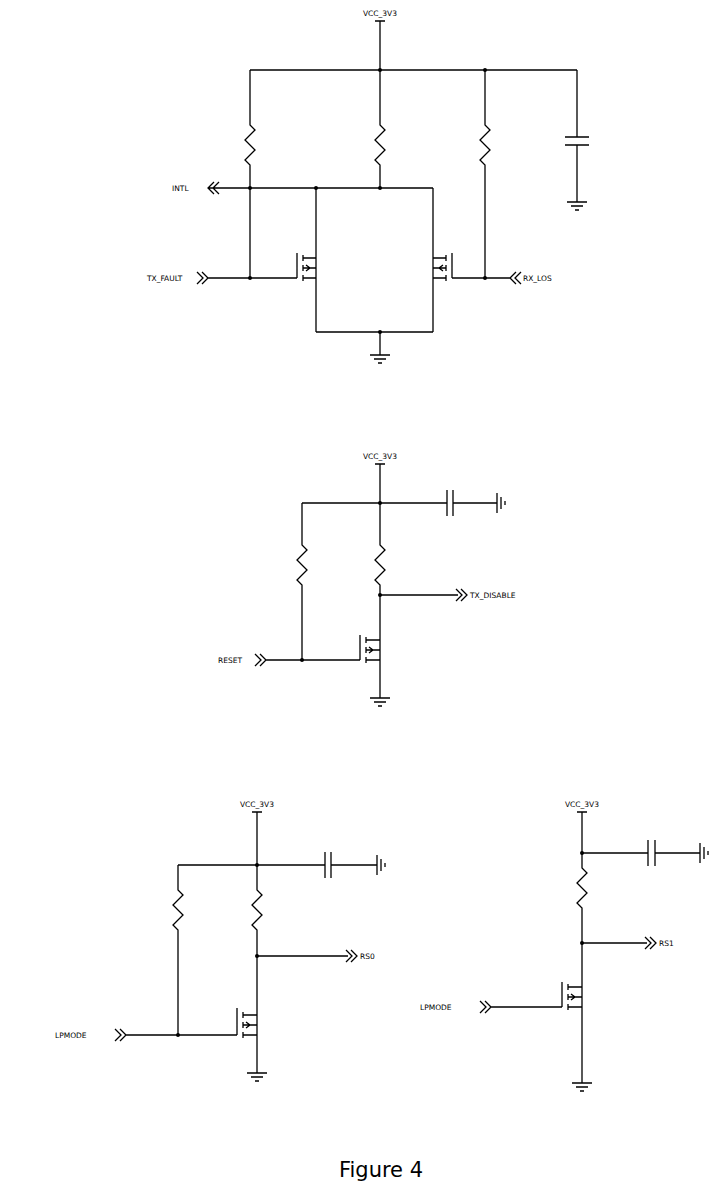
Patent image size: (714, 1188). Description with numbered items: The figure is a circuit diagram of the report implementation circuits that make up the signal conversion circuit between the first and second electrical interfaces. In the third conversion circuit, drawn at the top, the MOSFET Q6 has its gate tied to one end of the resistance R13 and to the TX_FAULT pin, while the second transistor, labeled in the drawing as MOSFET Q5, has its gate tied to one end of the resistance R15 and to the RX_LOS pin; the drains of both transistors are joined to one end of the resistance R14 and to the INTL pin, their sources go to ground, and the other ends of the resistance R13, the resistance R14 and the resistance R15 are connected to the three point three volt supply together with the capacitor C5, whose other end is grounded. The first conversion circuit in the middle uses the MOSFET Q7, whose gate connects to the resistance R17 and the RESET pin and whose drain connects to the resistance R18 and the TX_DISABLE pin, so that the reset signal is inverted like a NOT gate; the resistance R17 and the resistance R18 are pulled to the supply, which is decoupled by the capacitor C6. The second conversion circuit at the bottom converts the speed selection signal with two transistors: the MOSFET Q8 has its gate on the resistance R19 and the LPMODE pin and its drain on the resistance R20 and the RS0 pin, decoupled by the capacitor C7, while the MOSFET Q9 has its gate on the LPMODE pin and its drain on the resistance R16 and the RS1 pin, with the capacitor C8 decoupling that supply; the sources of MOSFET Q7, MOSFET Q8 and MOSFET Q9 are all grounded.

The resistance R13 is at (261, 174).
The resistance R14 is at (391, 129).
The resistance R15 is at (496, 174).
The capacitor C5 is at (591, 140).
The MOSFET Q6 is at (333, 260).
The MOSFET NTS4001N (RX_LOS) Q5 is at (455, 260).
The resistance R17 is at (313, 581).
The resistance R18 is at (391, 549).
The capacitor C6 is at (475, 504).
The MOSFET Q7 is at (397, 646).
The resistance R19 is at (189, 950).
The resistance R20 is at (268, 910).
The capacitor C7 is at (354, 866).
The MOSFET Q8 is at (274, 1014).
The resistance R16 is at (593, 898).
The capacitor C8 is at (678, 853).
The MOSFET Q9 is at (599, 1013).